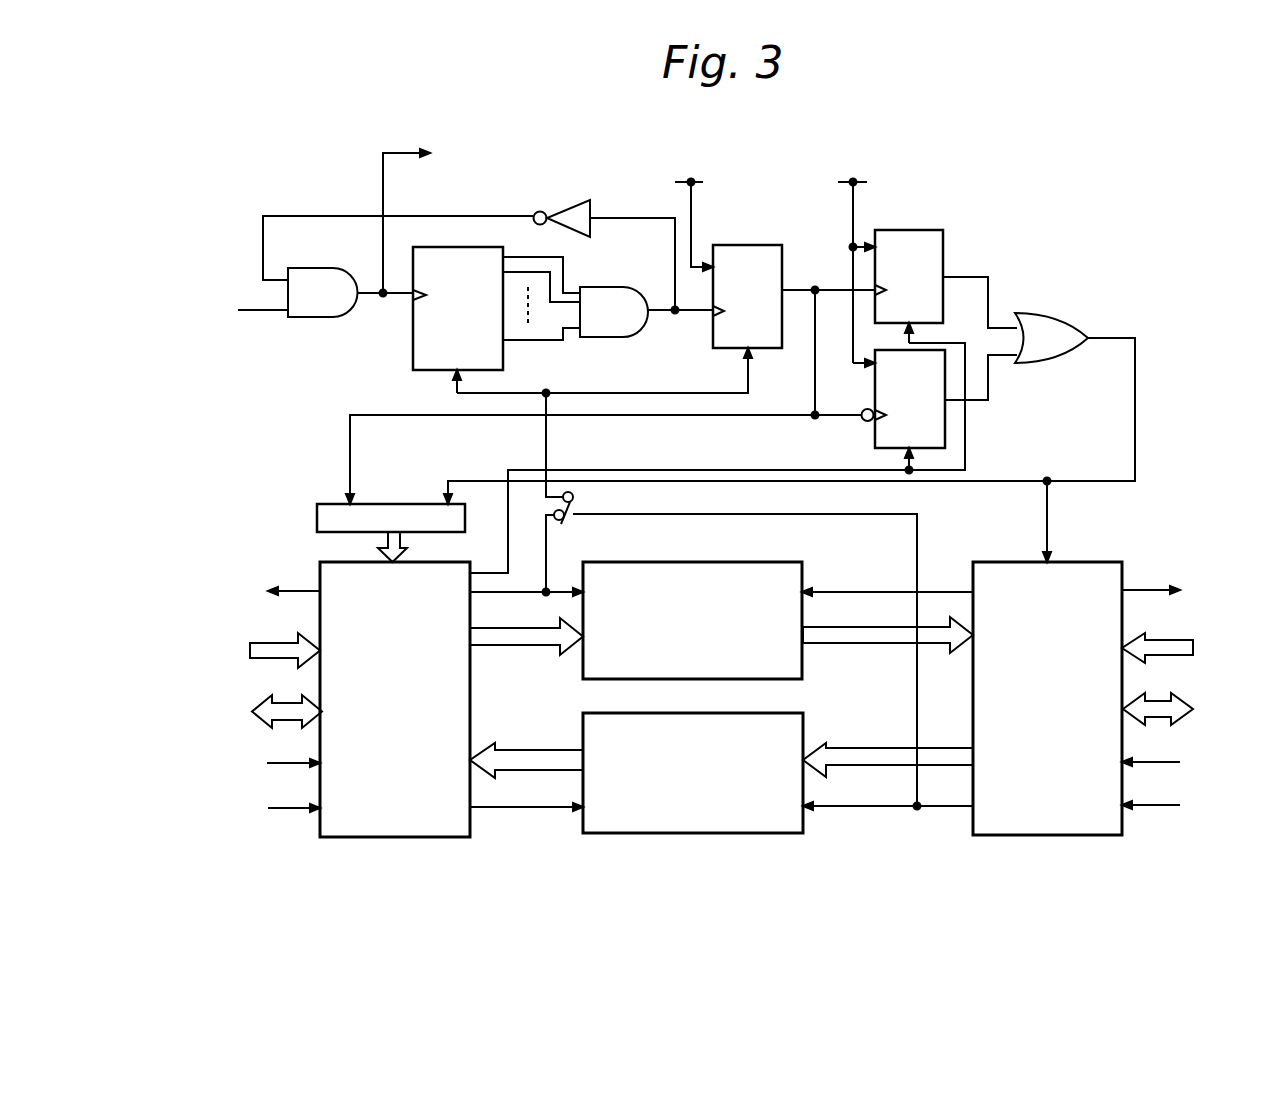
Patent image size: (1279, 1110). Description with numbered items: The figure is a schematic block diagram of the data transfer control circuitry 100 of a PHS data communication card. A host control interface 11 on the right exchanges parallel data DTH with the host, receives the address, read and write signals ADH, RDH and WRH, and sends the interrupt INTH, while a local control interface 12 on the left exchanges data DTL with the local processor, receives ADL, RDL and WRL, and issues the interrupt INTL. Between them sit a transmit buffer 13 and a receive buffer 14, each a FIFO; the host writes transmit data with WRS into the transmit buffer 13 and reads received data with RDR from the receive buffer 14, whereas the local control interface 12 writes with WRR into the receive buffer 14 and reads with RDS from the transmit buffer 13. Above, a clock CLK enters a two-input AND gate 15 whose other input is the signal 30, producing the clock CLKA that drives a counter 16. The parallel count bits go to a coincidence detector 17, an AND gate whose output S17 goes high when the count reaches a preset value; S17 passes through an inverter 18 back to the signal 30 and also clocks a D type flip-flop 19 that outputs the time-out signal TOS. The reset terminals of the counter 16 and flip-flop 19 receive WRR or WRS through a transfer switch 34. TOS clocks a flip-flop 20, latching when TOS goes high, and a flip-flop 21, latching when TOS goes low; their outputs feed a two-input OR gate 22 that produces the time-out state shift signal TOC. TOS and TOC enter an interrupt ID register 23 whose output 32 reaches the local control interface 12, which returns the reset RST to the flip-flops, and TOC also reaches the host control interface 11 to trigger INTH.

The data transfer control circuitry 100 is at (734, 135).
The signal 30 is at (296, 215).
The two-input AND gate 15 is at (315, 318).
The counter 16 is at (412, 350).
The coincidence detector 17 is at (617, 338).
The inverter 18 is at (567, 200).
The D type flip-flop 19 is at (752, 245).
The flip-flop 20 is at (922, 230).
The flip-flop 21 is at (875, 440).
The two-input OR gate 22 is at (1050, 313).
The interrupt ID register 23 is at (383, 504).
The output 32 is at (407, 544).
The transfer switch 34 is at (567, 523).
The host control interface 11 is at (1086, 562).
The local control interface 12 is at (320, 565).
The transmit buffer 13 is at (648, 834).
The receive buffer 14 is at (705, 562).